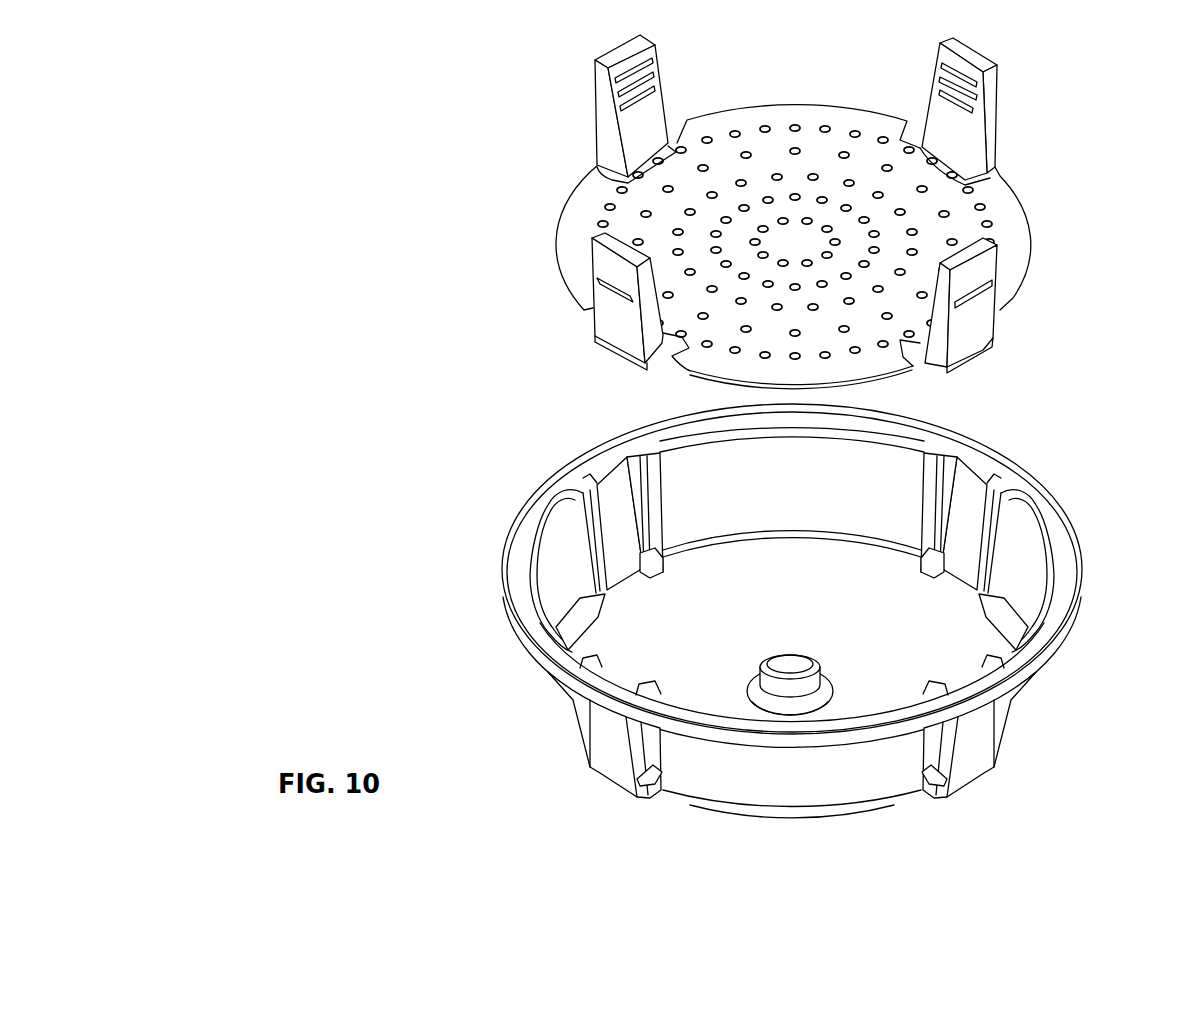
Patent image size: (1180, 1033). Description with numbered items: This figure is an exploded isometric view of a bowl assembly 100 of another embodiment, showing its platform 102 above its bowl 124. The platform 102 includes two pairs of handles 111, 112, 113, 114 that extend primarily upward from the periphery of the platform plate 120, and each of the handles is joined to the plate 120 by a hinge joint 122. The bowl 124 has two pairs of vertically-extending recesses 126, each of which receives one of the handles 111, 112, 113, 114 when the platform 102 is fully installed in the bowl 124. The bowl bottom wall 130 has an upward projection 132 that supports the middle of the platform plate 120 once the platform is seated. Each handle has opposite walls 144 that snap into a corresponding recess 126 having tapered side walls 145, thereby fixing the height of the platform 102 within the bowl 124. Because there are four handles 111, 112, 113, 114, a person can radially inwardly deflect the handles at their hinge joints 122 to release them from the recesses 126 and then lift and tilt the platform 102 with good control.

The bowl assembly 100 is at (497, 383).
The platform 102 is at (557, 213).
The handle 111 is at (658, 66).
The handle 112 is at (993, 278).
The handle 113 is at (593, 262).
The handle 114 is at (997, 88).
The platform plate 120 is at (1027, 203).
The hinge joint 122 is at (665, 360).
The bowl 124 is at (527, 503).
The recess 126 is at (612, 487).
The bowl bottom wall 130 is at (790, 594).
The upward projection 132 is at (767, 658).
The opposite walls 144 is at (927, 345).
The tapered side walls 145 is at (953, 472).